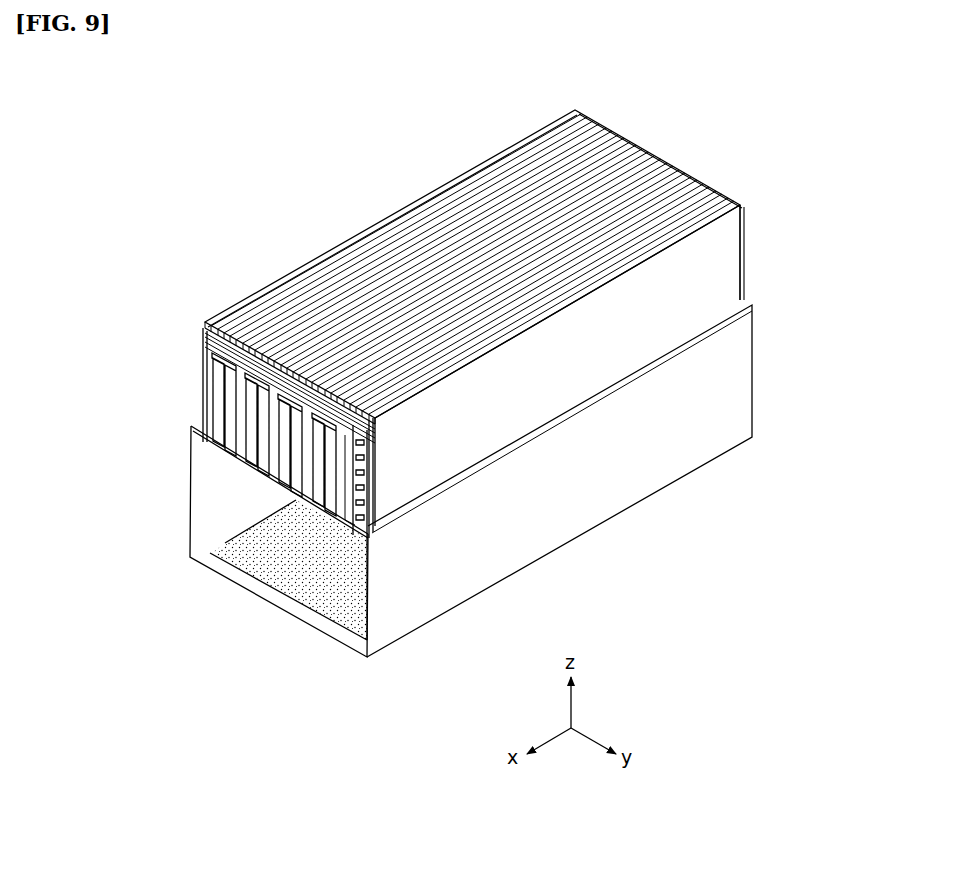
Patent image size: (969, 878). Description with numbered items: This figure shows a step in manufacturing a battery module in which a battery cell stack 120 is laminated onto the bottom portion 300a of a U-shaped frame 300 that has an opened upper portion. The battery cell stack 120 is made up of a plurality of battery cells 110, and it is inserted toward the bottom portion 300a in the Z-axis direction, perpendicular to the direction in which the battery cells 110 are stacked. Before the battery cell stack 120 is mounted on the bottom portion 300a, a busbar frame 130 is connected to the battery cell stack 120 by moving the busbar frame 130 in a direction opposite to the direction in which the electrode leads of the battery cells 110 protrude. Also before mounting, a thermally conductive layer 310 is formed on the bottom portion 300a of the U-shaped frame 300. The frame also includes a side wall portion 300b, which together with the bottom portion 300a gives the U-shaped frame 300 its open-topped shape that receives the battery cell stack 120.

The battery cell 110 is at (560, 375).
The battery cell stack 120 is at (388, 252).
The busbar frame 130 is at (200, 370).
The U-shaped frame 300 is at (466, 536).
The bottom portion 300a is at (302, 622).
The side wall of housing tray 300b is at (405, 594).
The thermally conductive layer 310 is at (280, 571).